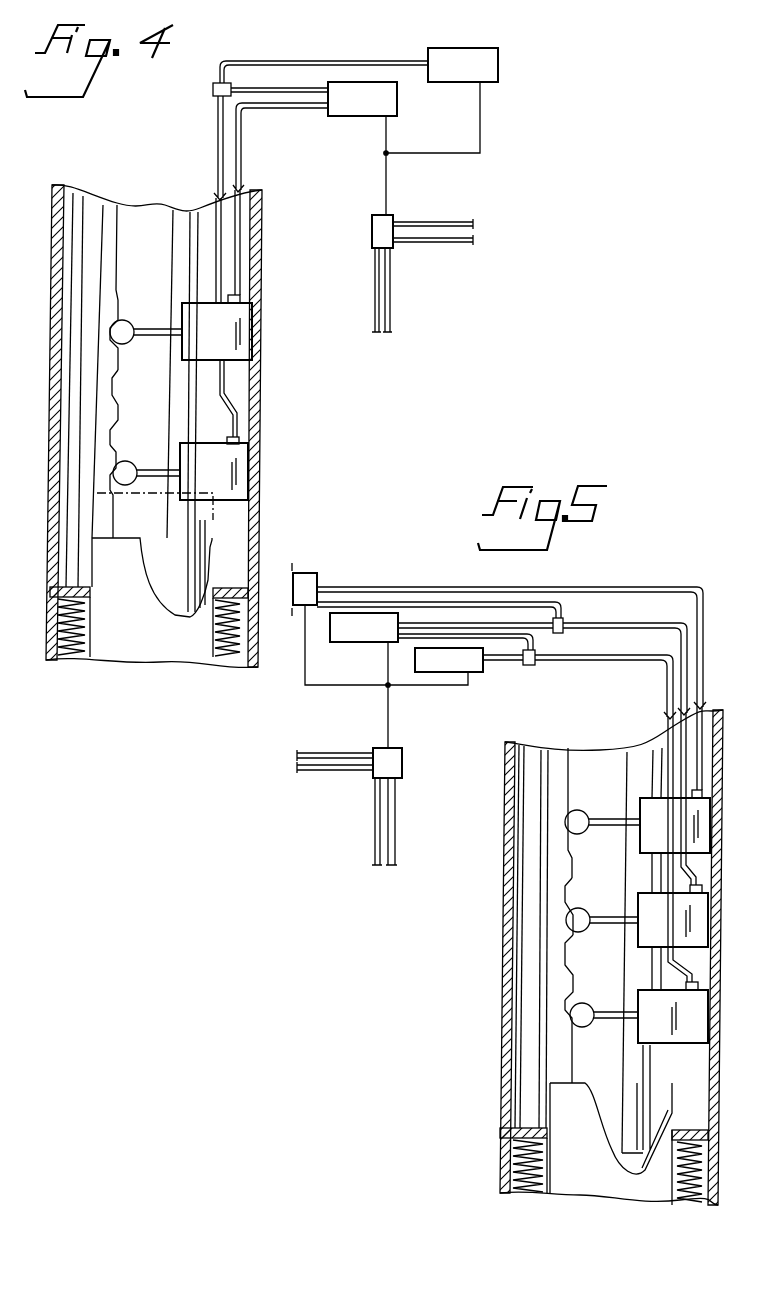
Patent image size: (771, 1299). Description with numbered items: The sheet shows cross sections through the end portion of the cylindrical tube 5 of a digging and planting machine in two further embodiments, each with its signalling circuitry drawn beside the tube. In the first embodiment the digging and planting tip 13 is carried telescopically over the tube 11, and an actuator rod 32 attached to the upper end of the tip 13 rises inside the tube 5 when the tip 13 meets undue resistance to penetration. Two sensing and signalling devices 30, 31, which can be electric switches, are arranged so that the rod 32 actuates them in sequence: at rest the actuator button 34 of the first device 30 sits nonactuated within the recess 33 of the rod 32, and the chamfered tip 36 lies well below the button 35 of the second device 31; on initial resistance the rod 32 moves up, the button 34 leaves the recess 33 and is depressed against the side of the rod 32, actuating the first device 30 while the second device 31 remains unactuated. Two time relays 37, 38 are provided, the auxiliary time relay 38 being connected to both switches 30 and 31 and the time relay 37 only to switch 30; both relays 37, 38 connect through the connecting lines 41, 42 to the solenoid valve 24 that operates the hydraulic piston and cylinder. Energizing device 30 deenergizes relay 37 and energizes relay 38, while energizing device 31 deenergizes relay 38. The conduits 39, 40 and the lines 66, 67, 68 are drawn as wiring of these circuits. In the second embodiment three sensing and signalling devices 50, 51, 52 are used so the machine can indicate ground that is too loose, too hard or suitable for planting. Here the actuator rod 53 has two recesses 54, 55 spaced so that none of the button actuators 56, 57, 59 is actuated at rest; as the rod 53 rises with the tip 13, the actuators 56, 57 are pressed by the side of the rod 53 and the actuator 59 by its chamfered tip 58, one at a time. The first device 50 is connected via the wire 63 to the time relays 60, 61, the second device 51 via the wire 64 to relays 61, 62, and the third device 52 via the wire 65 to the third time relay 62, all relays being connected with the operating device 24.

In FIG. 4, the cylindrical tube 5 is at (250, 572).
In FIG. 5, the cylindrical tube 5 is at (712, 1108).
In FIG. 4, the tube 11 is at (185, 518).
In FIG. 5, the tube 11 is at (640, 1063).
In FIG. 4, the digging and planting tip 13 is at (197, 638).
In FIG. 5, the digging and planting tip 13 is at (628, 1190).
In FIG. 4, the solenoid valve 24 is at (375, 228).
In FIG. 5, the solenoid valve 24 is at (395, 765).
In FIG. 4, the first sensing and signalling device 30 is at (238, 462).
In FIG. 4, the second sensing and signalling device 31 is at (252, 352).
In FIG. 4, the actuator rod 32 is at (97, 482).
In FIG. 4, the recess 33 is at (110, 427).
In FIG. 4, the actuator button 34 is at (105, 472).
In FIG. 4, the actuator button 35 is at (107, 332).
In FIG. 4, the chamfered tip 36 is at (100, 345).
In FIG. 4, the time relay 37 is at (446, 60).
In FIG. 4, the auxiliary time relay 38 is at (363, 80).
In FIG. 4, the first conduit 39 is at (220, 238).
In FIG. 4, the second conduit 40 is at (238, 275).
In FIG. 4, the connecting line 41 is at (425, 153).
In FIG. 4, the connecting line 42 is at (386, 137).
In FIG. 5, the first sensing and signalling device 50 is at (705, 1010).
In FIG. 5, the second sensing and signalling device 51 is at (700, 915).
In FIG. 5, the third sensing and signalling device 52 is at (703, 835).
In FIG. 5, the actuator rod 53 is at (555, 1035).
In FIG. 5, the recess 54 is at (565, 983).
In FIG. 5, the recess 55 is at (565, 890).
In FIG. 5, the button actuator 56 is at (570, 1012).
In FIG. 5, the button actuator 57 is at (565, 915).
In FIG. 5, the chamfered tip 58 is at (545, 840).
In FIG. 5, the button actuator 59 is at (565, 817).
In FIG. 5, the time relay 60 is at (478, 666).
In FIG. 5, the time relay 61 is at (362, 618).
In FIG. 5, the third time relay 62 is at (305, 578).
In FIG. 5, the wire 63 is at (670, 748).
In FIG. 5, the wire 64 is at (683, 765).
In FIG. 5, the wire 65 is at (700, 784).
In FIG. 5, the connecting line 66 is at (321, 690).
In FIG. 5, the connecting line 67 is at (388, 674).
In FIG. 5, the connecting line 68 is at (442, 686).